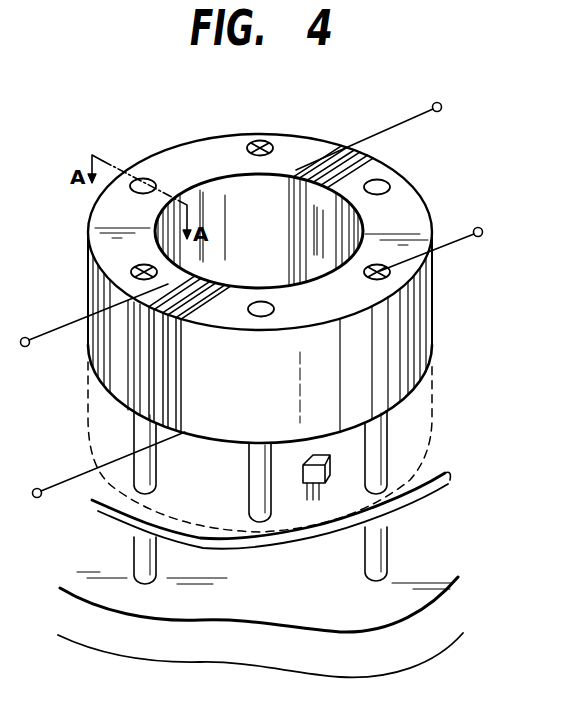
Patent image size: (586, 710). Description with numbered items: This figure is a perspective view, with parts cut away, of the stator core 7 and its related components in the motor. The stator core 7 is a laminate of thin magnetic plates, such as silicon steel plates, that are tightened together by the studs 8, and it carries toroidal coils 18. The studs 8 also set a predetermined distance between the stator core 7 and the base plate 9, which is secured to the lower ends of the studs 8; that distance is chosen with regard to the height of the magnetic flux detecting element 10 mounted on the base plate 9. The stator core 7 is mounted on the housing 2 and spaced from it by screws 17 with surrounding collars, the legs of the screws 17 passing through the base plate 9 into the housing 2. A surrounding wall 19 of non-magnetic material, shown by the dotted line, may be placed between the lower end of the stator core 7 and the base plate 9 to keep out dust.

The housing 2 is at (438, 602).
The stator core 7 is at (434, 350).
The studs 8 is at (146, 183).
The base plate 9 is at (118, 521).
The magnetic flux detecting element 10 is at (301, 478).
The stator core fixing screws 17 is at (260, 140).
The toroidal coils 18 is at (332, 150).
The surrounding wall 19 is at (92, 427).